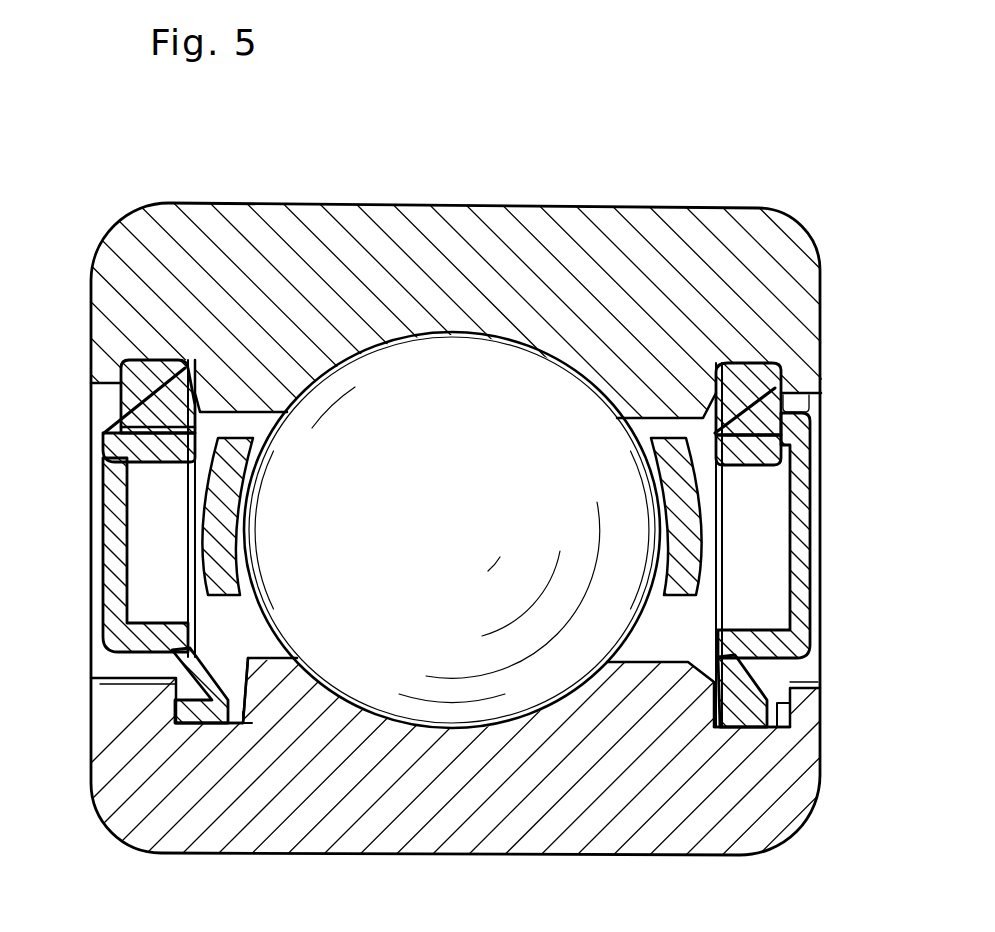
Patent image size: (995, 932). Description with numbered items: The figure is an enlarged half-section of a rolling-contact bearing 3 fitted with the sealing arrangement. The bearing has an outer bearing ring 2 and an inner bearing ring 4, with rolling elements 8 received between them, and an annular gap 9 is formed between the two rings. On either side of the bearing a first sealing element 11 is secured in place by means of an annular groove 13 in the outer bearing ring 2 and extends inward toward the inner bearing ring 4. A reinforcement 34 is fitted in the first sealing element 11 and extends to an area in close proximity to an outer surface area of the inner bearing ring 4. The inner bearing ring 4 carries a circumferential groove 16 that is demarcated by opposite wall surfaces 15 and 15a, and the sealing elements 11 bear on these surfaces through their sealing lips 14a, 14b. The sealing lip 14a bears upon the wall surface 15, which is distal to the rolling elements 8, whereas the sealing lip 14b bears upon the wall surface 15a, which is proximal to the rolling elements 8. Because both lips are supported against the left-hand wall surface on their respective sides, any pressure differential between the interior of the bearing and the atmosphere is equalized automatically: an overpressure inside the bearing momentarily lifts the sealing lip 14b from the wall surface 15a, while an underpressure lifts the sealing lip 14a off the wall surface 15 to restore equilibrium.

The outer bearing ring 2 is at (657, 238).
The rolling-contact bearing 3 is at (447, 188).
The inner bearing ring 4 is at (660, 826).
The rolling elements 8 is at (465, 481).
The annular gap 9 is at (672, 627).
The first sealing element 11 is at (100, 462).
The annular groove 13 is at (163, 358).
The sealing lip 14a is at (196, 724).
The sealing lip 14b is at (750, 730).
The wall surface 15 is at (171, 700).
The wall surface 15a is at (250, 690).
The circumferential groove 16 is at (778, 712).
The reinforcement 34 is at (802, 538).